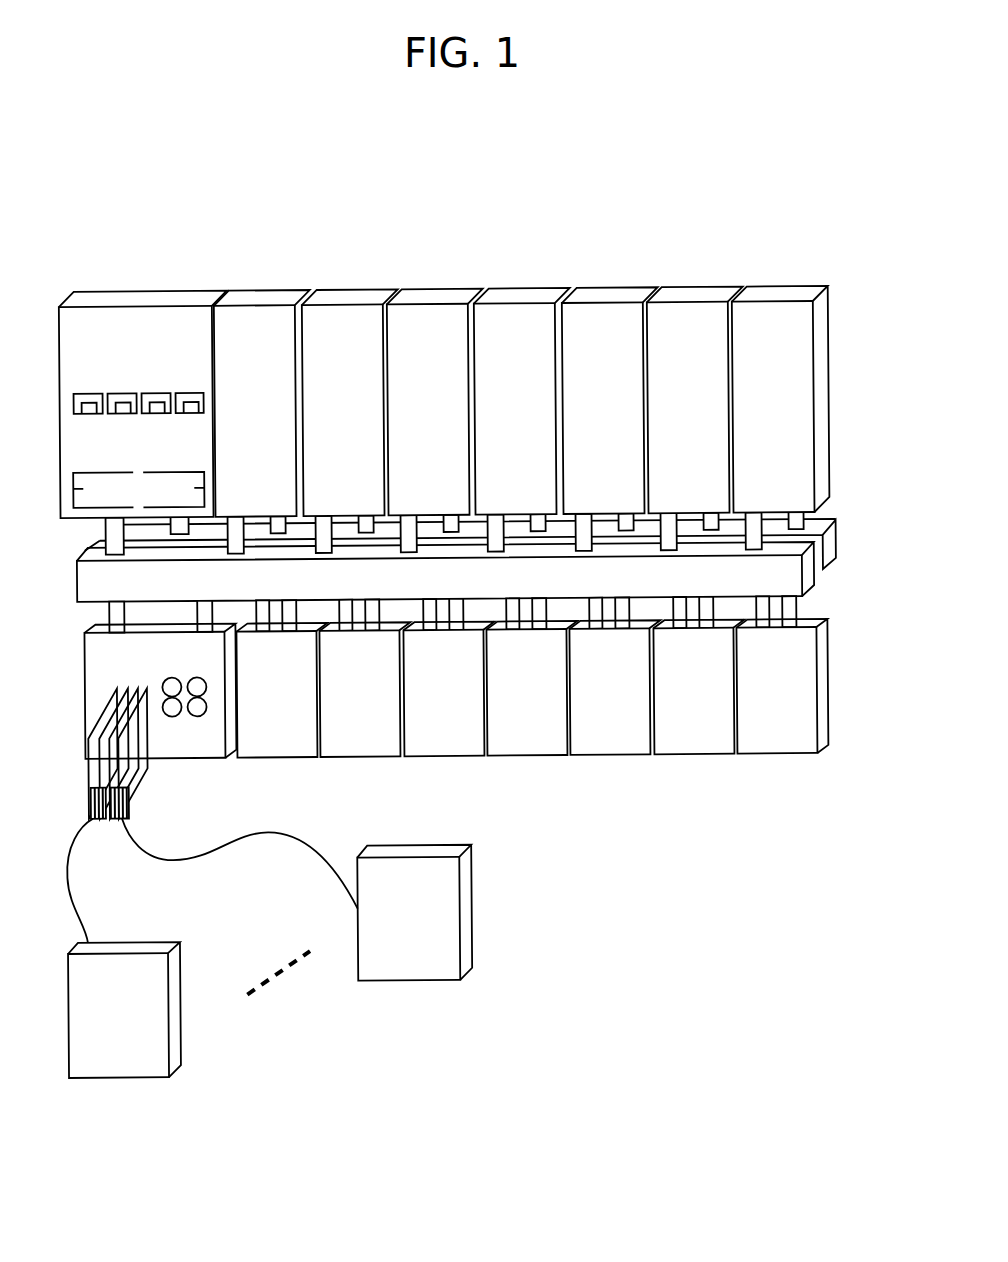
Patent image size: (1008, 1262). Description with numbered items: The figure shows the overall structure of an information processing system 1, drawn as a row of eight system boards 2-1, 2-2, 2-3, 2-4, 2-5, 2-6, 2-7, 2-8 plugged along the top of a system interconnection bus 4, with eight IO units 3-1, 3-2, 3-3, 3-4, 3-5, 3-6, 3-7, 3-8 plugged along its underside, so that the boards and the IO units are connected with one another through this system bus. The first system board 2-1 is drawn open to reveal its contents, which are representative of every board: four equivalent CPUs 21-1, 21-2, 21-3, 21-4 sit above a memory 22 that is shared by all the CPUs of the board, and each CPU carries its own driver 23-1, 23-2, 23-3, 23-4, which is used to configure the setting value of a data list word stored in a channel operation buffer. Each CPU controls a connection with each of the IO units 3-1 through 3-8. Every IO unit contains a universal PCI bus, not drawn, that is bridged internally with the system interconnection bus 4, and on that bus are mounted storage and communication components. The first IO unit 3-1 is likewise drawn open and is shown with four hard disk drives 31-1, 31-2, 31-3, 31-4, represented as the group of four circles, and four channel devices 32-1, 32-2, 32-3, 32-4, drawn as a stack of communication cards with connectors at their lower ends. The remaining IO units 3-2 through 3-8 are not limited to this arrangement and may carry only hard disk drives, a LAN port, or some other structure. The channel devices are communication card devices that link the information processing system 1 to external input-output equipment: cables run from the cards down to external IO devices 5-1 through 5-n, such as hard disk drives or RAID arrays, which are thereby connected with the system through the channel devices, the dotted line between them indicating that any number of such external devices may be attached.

The information processing system 1 is at (811, 196).
The system board 2-1 is at (115, 288).
The system board 2-2 is at (262, 288).
The system board 2-3 is at (350, 288).
The system board 2-4 is at (435, 288).
The system board 2-5 is at (522, 288).
The system board 2-6 is at (610, 288).
The system board 2-7 is at (695, 288).
The system board 2-8 is at (780, 288).
The CPU 21-1 is at (84, 391).
The CPU 21-2 is at (118, 391).
The CPU 21-3 is at (152, 391).
The CPU 21-4 is at (185, 391).
The memory 22 is at (168, 469).
The driver 23-1 is at (93, 411).
The driver 23-2 is at (127, 411).
The driver 23-3 is at (161, 411).
The driver 23-4 is at (195, 411).
The IO unit 3-1 is at (217, 757).
The IO unit 3-2 is at (280, 756).
The IO unit 3-3 is at (363, 756).
The IO unit 3-4 is at (447, 756).
The IO unit 3-5 is at (530, 756).
The IO unit 3-6 is at (613, 756).
The IO unit 3-7 is at (697, 756).
The IO unit 3-8 is at (780, 756).
The hard disk drive 31-1 is at (161, 684).
The hard disk drive 31-2 is at (194, 677).
The hard disk drive 31-3 is at (164, 714).
The hard disk drive 31-4 is at (203, 715).
The channel device 32-1 is at (103, 712).
The channel device 32-2 is at (103, 745).
The channel device 32-3 is at (117, 775).
The channel device 32-4 is at (135, 790).
The system interconnection bus 4 is at (823, 573).
The IO device 5-1 is at (178, 973).
The IO device 5-n is at (468, 889).